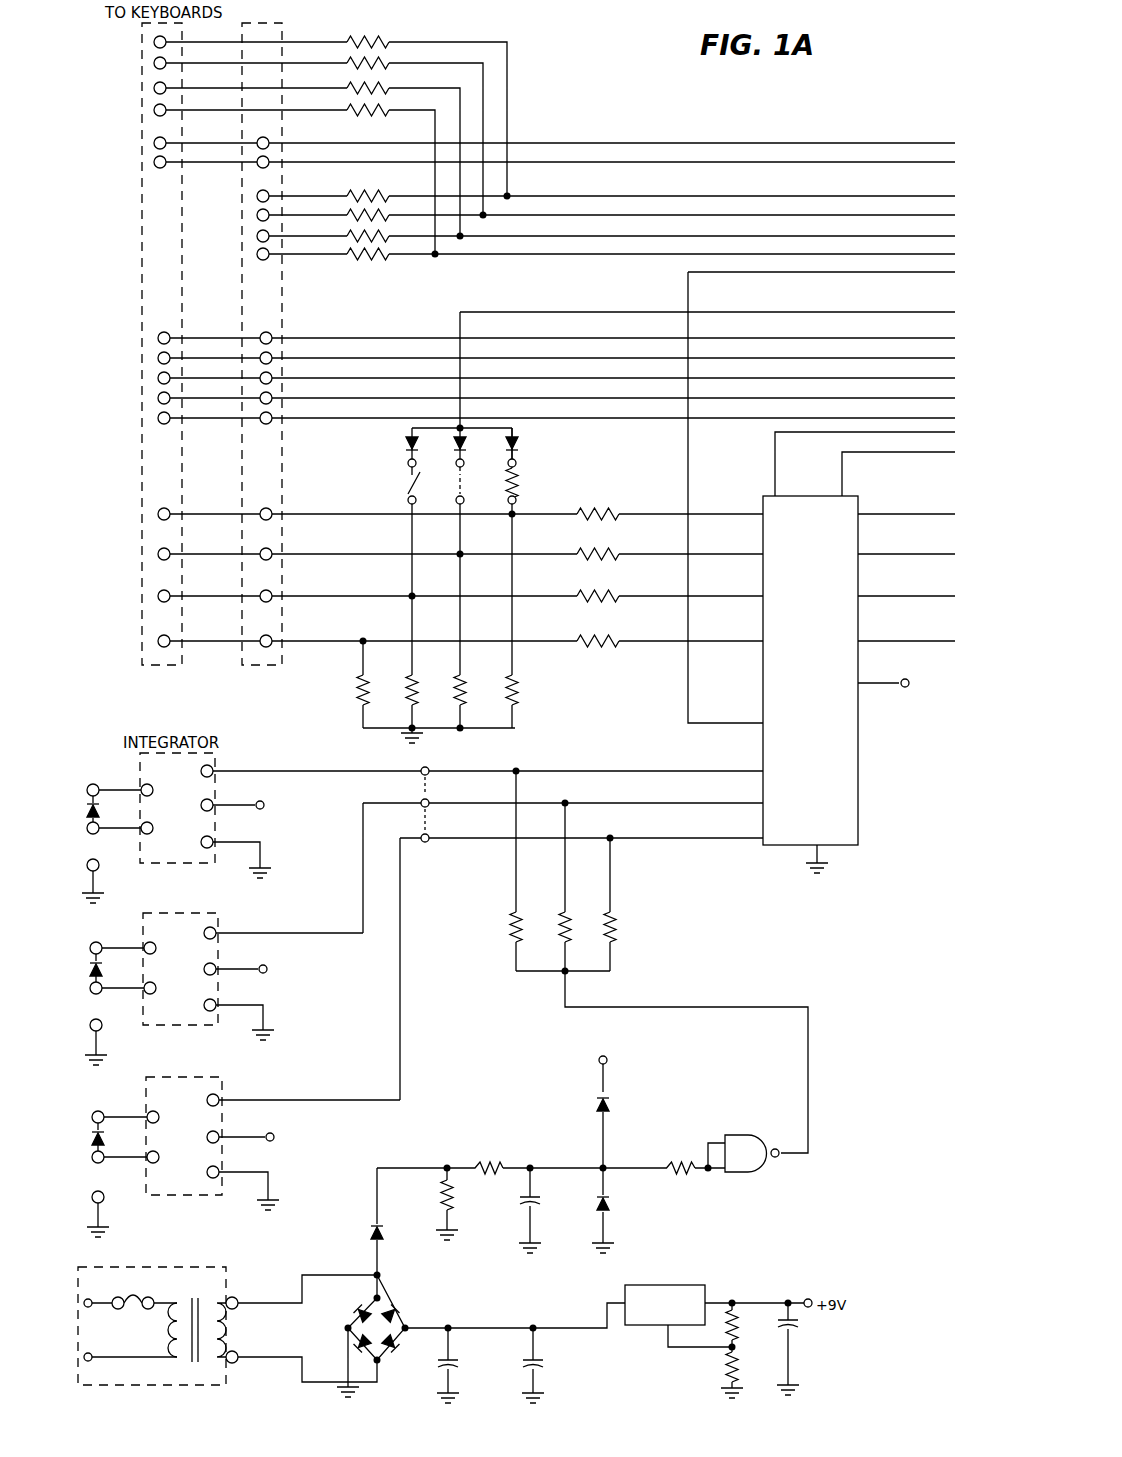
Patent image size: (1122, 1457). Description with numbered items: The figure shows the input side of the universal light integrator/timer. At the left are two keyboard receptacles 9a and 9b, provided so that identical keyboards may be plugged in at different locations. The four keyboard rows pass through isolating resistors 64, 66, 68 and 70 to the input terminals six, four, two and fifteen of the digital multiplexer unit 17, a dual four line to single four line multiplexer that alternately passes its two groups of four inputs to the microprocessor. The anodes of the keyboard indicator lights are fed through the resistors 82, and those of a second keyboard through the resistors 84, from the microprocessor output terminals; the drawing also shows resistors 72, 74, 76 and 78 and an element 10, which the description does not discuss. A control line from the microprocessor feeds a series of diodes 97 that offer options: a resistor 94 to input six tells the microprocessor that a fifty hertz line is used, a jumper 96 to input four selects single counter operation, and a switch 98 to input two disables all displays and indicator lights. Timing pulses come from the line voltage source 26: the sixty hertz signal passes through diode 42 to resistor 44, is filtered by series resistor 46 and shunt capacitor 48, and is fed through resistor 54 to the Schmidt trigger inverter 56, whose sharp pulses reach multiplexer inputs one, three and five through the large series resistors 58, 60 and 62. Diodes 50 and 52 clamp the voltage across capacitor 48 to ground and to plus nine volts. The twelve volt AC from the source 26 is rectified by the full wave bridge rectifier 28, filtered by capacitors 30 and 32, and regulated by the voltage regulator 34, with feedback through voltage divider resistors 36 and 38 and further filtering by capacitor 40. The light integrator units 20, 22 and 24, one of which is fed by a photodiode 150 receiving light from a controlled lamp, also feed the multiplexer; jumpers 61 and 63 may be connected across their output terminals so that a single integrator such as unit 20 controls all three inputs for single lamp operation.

The keyboard receptacle 9a is at (142, 468).
The keyboard receptacle 9b is at (282, 468).
The resistors 84 is at (388, 44).
The resistors 82 is at (381, 257).
The diodes 97 is at (510, 446).
The resistor 94 is at (518, 454).
The switch 98 is at (416, 484).
The jumper 96 is at (462, 482).
The resistor 10 is at (522, 485).
The isolating resistor 64 is at (602, 515).
The isolating resistor 66 is at (607, 556).
The isolating resistor 68 is at (610, 598).
The isolating resistor 70 is at (612, 645).
The 470 ohm resistor 72 is at (356, 698).
The 470 ohm resistor 74 is at (410, 698).
The 470 ohm resistor 76 is at (461, 698).
The 470 ohm resistor 78 is at (511, 698).
The digital multiplexer unit 17 is at (858, 770).
The jumper 61 is at (428, 782).
The jumper 63 is at (428, 817).
The series resistor 62 is at (518, 920).
The series resistor 60 is at (566, 920).
The series resistor 58 is at (614, 920).
The Schmidt trigger inverter 56 is at (758, 1135).
The resistor 54 is at (684, 1175).
The series resistor 46 is at (482, 1168).
The resistor 44 is at (451, 1216).
The shunt capacitor 48 is at (535, 1200).
The diode 52 is at (596, 1102).
The diode 50 is at (608, 1199).
The diode 42 is at (384, 1240).
The line voltage source 26 is at (172, 1268).
The full wave bridge rectifier 28 is at (385, 1339).
The capacitor 30 is at (436, 1362).
The capacitor 32 is at (533, 1364).
The voltage regulator 34 is at (664, 1285).
The voltage divider resistor 36 is at (724, 1340).
The voltage divider resistor 38 is at (724, 1372).
The capacitor 40 is at (804, 1318).
The light integrator unit 20 is at (215, 760).
The light integrator unit 22 is at (218, 920).
The light integrator unit 24 is at (222, 1084).
The photodiode 150 is at (86, 816).